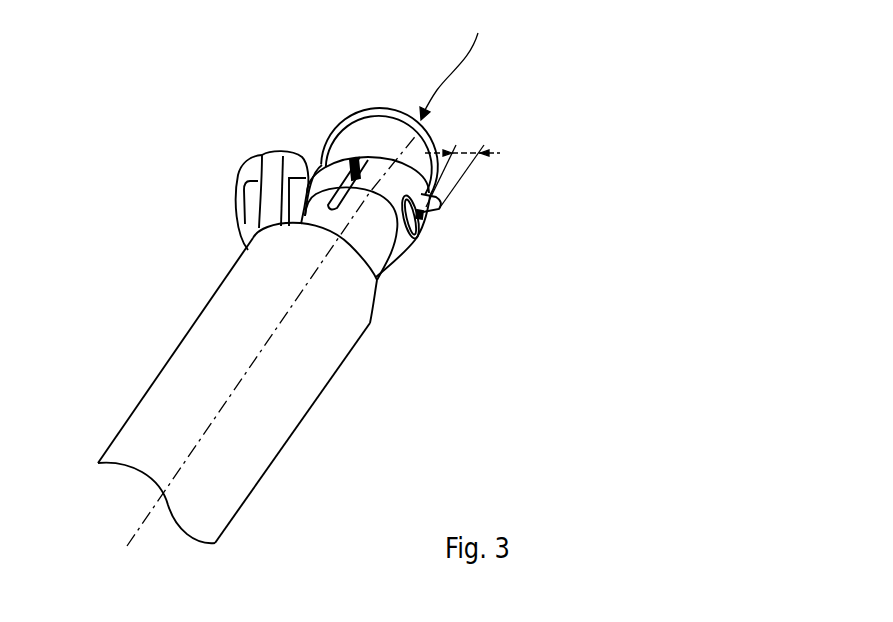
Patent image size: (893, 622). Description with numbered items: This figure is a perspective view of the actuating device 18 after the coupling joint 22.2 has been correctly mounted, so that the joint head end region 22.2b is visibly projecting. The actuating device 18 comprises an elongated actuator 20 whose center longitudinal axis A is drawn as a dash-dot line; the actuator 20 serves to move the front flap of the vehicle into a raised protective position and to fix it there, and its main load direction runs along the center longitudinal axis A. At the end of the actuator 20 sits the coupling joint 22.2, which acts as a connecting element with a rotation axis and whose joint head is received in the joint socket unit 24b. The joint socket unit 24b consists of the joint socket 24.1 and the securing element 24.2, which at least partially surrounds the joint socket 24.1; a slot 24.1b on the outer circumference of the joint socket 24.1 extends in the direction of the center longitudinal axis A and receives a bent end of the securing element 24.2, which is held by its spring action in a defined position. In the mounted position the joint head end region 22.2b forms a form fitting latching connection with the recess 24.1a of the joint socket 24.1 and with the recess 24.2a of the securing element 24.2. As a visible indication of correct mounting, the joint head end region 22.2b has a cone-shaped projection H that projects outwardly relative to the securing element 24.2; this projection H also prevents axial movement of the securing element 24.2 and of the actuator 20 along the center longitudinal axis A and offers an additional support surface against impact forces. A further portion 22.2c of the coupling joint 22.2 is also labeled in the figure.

The actuating device 18 is at (175, 168).
The actuator 20 is at (290, 383).
The center longitudinal axis A is at (145, 517).
The coupling joint 22.2 is at (275, 158).
The joint head end region 22.2b is at (446, 204).
The hinge slot 22.2c is at (246, 238).
The joint socket 24.1 is at (402, 253).
The recess of the joint socket 24.1a is at (430, 222).
The slot 24.1b is at (341, 160).
The securing element 24.2 is at (374, 160).
The recess of the securing element 24.2a is at (495, 246).
The joint socket unit 24b is at (463, 63).
The projection H is at (485, 143).